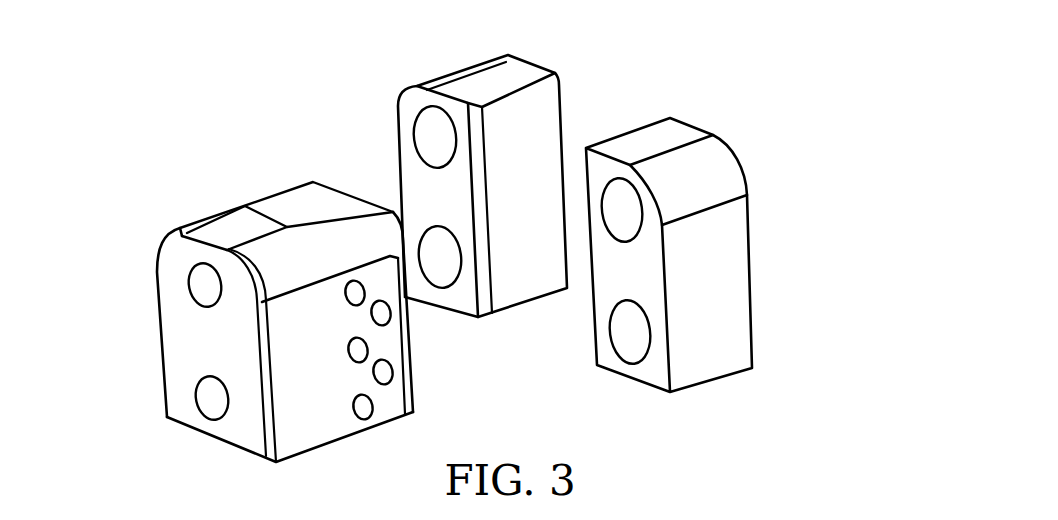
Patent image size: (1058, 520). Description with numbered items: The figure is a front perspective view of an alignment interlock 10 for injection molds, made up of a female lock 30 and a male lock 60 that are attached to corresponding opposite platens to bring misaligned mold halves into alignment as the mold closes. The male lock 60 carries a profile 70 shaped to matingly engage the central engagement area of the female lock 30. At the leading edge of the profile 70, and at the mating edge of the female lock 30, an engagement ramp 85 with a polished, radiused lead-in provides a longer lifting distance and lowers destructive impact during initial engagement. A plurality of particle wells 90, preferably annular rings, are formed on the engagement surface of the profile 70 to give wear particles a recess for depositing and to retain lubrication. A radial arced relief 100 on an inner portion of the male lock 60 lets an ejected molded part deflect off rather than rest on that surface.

The alignment interlock 10 is at (130, 120).
The female lock 30 is at (580, 32).
The male lock 60 is at (118, 367).
The profile 70 is at (396, 218).
The engagement ramp 85 is at (407, 372).
The particle wells 90 is at (352, 410).
The radial arced relief 100 is at (307, 202).